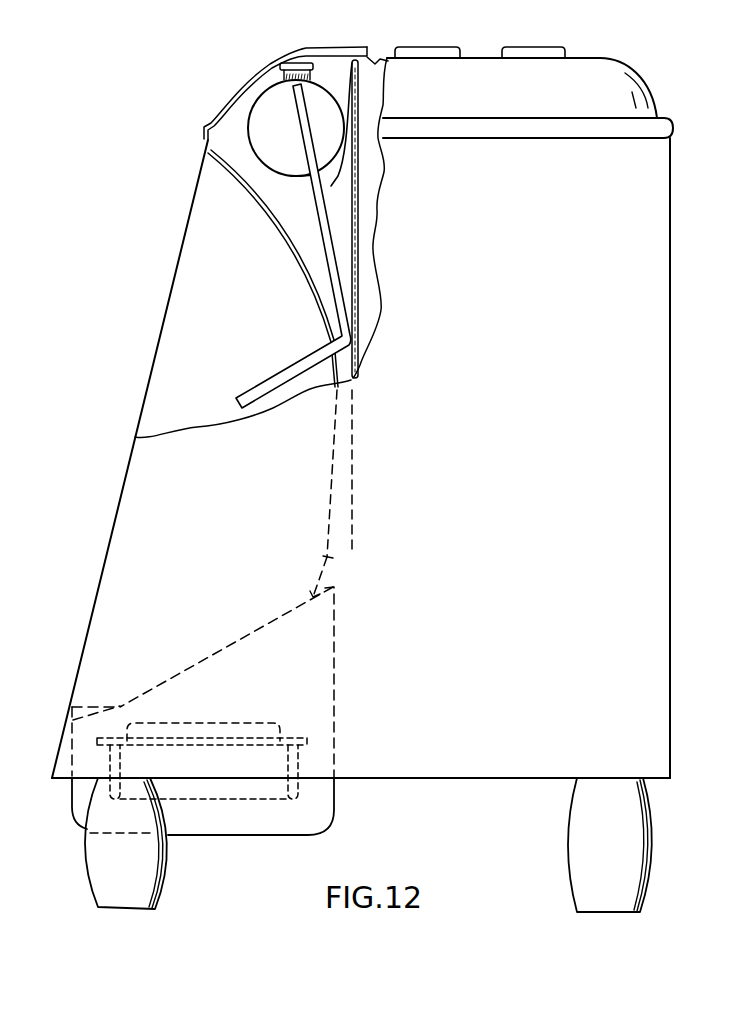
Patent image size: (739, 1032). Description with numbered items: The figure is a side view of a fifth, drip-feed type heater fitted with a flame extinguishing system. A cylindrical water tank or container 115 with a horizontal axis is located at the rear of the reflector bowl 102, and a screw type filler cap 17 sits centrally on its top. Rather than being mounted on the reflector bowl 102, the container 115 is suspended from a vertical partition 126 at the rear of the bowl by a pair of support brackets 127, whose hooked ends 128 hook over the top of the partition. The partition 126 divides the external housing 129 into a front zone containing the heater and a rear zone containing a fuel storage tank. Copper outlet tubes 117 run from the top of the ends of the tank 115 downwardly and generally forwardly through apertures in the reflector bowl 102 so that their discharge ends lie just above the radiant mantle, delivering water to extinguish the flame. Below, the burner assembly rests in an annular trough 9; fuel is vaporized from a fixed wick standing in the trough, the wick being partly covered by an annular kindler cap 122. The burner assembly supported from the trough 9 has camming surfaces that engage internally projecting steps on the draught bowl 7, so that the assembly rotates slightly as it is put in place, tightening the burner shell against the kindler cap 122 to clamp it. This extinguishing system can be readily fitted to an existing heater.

The filler cap 17 is at (291, 64).
The container 115 is at (283, 155).
The outlet tubes 117 is at (350, 280).
The vertical partition 126 is at (358, 192).
The support brackets 127 is at (349, 133).
The hooked ends 128 is at (377, 64).
The external housing 129 is at (425, 373).
The reflector bowl 102 is at (328, 558).
The draught bowl 7 is at (338, 655).
The kindler cap 122 is at (293, 737).
The annular trough 9 is at (300, 763).